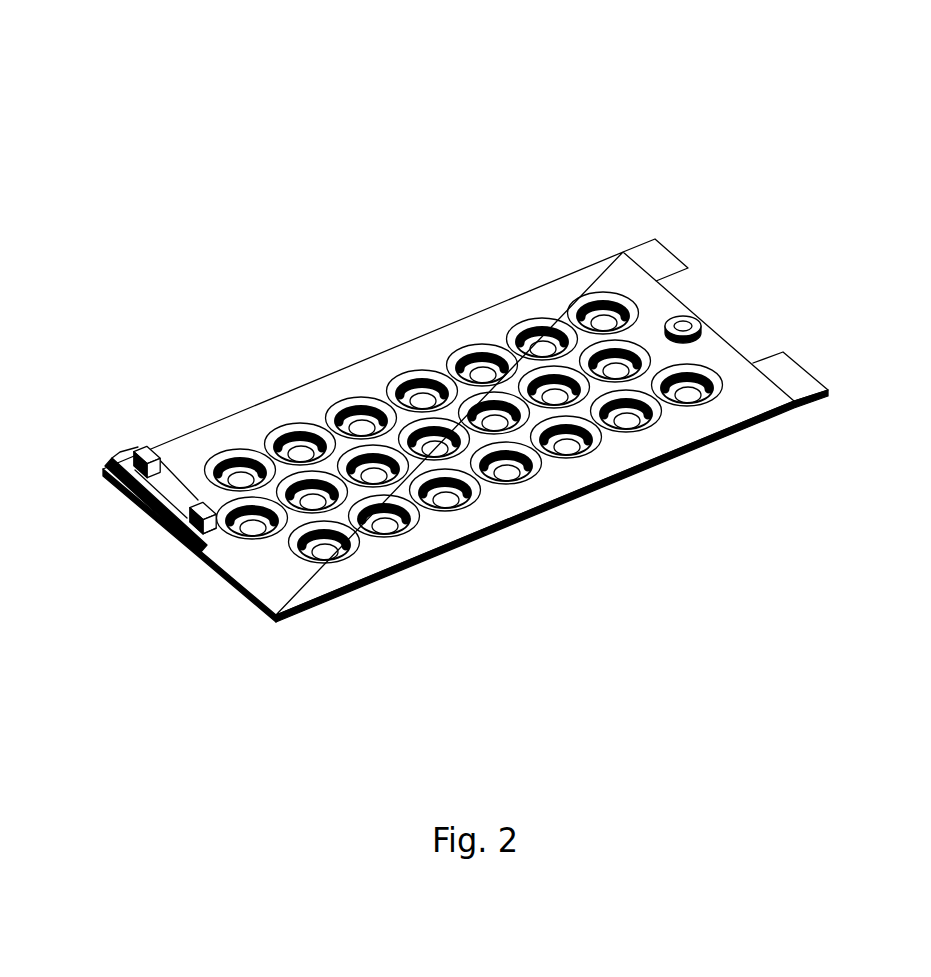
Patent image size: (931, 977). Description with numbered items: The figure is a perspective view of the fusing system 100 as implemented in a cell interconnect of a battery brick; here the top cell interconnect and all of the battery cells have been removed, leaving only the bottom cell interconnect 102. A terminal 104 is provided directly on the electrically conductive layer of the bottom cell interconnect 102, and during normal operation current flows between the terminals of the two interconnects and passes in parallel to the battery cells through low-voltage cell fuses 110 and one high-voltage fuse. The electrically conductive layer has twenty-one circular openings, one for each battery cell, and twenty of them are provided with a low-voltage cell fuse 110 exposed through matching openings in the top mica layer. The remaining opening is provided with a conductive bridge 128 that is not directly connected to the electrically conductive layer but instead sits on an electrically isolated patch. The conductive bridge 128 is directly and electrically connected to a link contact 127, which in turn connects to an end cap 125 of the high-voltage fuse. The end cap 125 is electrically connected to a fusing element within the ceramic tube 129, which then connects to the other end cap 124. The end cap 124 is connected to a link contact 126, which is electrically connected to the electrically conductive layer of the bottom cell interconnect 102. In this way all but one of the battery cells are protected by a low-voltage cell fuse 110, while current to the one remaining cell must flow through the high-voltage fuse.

The fusing system 100 is at (257, 134).
The bottom cell interconnect 102 is at (487, 322).
The terminal 104 is at (674, 317).
The low-voltage cell fuse 110 is at (300, 440).
The end cap 124 is at (145, 462).
The end cap 125 is at (208, 508).
The link contact 126 is at (128, 470).
The link contact 127 is at (193, 523).
The conductive bridge 128 is at (247, 525).
The ceramic tube 129 is at (173, 485).